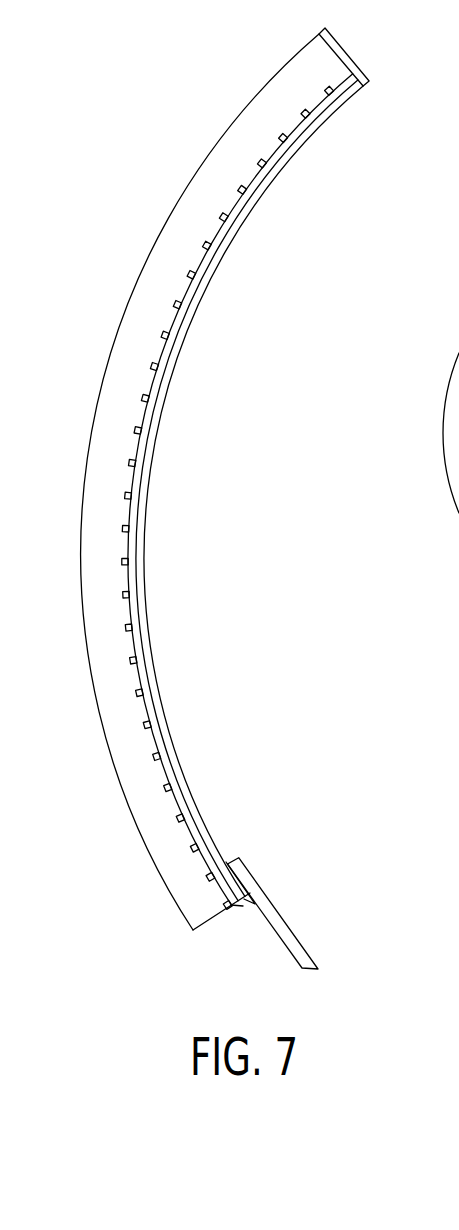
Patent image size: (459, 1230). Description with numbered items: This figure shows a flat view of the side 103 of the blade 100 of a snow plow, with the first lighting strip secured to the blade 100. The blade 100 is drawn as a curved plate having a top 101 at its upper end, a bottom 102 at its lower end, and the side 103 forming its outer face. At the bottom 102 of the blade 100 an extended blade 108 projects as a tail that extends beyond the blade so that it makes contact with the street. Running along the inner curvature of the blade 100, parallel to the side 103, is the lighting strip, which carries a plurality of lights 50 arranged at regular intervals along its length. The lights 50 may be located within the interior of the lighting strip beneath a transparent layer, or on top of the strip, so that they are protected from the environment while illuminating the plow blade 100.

The lights 50 is at (228, 222).
The blade 100 is at (178, 482).
The top 101 is at (319, 33).
The bottom 102 is at (229, 905).
The side 103 is at (88, 542).
The extended blade 108 is at (311, 972).